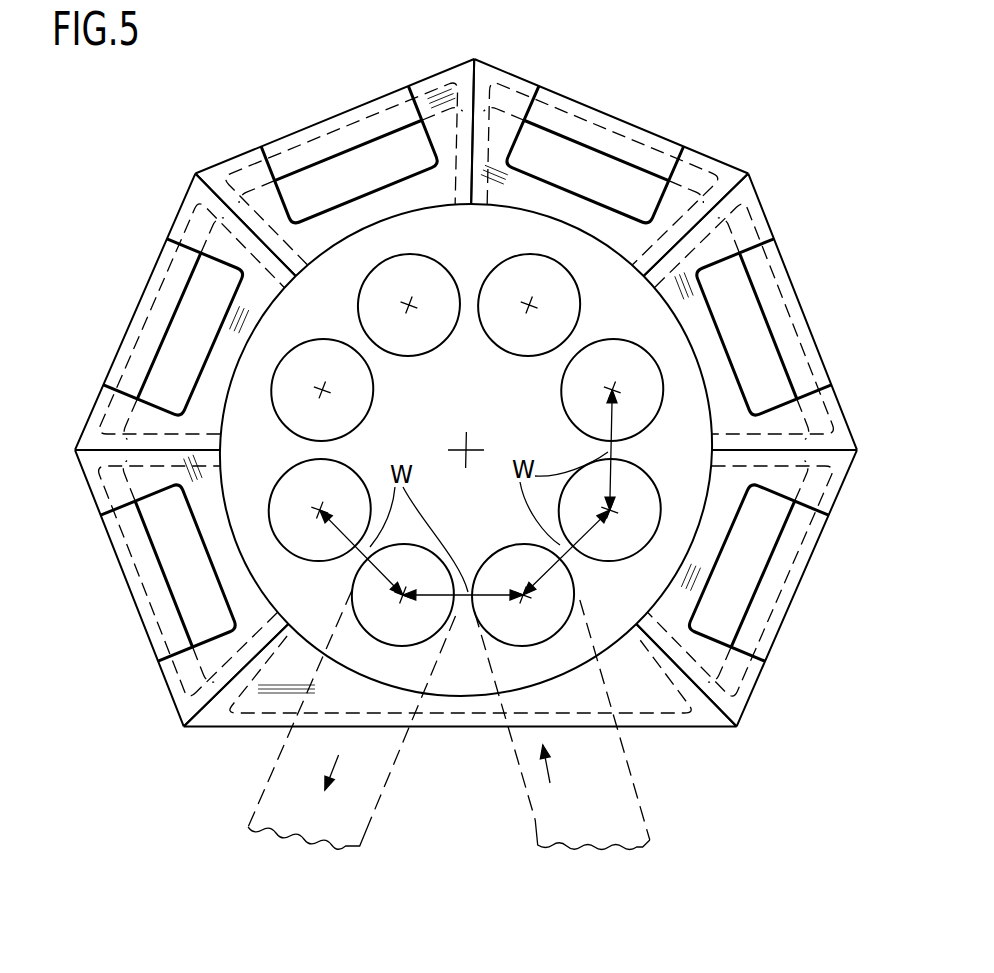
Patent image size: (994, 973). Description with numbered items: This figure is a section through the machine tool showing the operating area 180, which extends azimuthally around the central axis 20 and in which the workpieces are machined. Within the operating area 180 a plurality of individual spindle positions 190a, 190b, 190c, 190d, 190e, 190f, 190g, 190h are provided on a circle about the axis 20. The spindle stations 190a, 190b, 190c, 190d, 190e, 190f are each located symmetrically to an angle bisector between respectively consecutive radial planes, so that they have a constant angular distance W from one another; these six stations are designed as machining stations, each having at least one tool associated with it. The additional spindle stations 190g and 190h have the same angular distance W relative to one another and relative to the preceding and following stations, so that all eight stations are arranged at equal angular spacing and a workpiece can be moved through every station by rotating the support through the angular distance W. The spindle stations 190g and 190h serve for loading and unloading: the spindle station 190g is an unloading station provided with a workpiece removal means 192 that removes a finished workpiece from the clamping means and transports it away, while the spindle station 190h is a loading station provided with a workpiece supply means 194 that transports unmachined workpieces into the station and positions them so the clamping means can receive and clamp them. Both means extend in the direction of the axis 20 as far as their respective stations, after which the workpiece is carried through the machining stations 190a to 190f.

The axis 20 is at (466, 450).
The operating area 180 is at (637, 583).
The spindle station 190a is at (664, 524).
The spindle station 190b is at (664, 373).
The spindle station 190c is at (548, 254).
The spindle station 190d is at (391, 255).
The spindle station 190e is at (271, 383).
The spindle station 190f is at (277, 543).
The spindle station 190g is at (404, 648).
The spindle station 190h is at (551, 648).
The workpiece removal means 192 is at (365, 823).
The workpiece supply means 194 is at (537, 818).